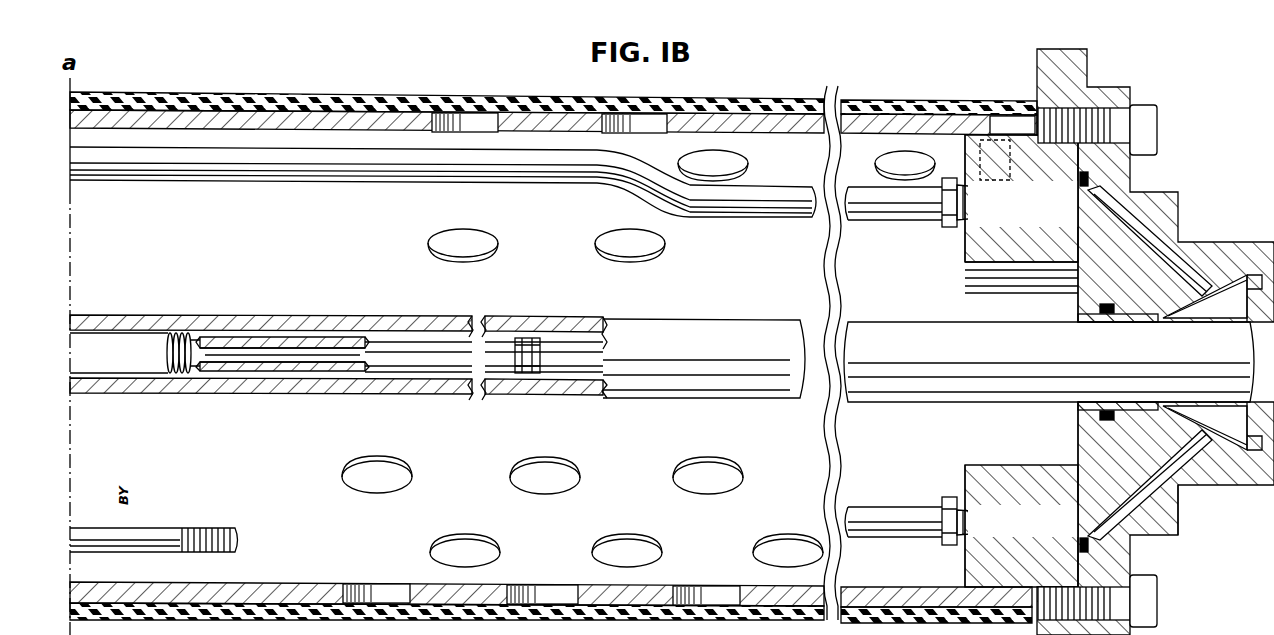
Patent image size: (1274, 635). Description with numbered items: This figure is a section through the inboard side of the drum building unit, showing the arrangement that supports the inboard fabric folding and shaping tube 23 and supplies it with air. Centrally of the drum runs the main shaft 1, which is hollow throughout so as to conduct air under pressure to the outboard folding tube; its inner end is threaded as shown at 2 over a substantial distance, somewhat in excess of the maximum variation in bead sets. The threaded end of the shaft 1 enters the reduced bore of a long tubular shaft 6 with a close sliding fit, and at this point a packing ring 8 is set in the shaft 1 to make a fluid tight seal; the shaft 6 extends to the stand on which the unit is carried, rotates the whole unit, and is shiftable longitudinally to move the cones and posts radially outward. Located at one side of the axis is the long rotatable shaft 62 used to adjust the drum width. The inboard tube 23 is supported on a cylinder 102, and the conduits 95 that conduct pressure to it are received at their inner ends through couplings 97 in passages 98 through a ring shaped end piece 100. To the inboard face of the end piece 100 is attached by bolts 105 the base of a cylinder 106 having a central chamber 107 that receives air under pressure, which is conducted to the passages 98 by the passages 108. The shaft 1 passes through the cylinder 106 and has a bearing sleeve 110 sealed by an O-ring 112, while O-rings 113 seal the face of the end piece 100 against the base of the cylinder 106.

The main shaft 1 is at (402, 342).
The threaded portion 2 is at (196, 332).
The tubular shaft 6 is at (622, 326).
The packing ring 8 is at (522, 338).
The inboard folding and shaping tube 23 is at (851, 104).
The rotatable shaft 62 is at (148, 542).
The conduits 95 is at (772, 207).
The couplings 97 is at (956, 221).
The passages 98 is at (1053, 204).
The ring shaped end piece 100 is at (972, 554).
The cylinder 102 is at (918, 121).
The bolts 105 is at (1155, 141).
The cylinder 106 is at (1196, 250).
The central chamber 107 is at (1248, 448).
The passages 108 is at (1172, 246).
The bearing sleeve 110 is at (1164, 320).
The O-ring 112 is at (1098, 415).
The O-rings 113 is at (1092, 181).